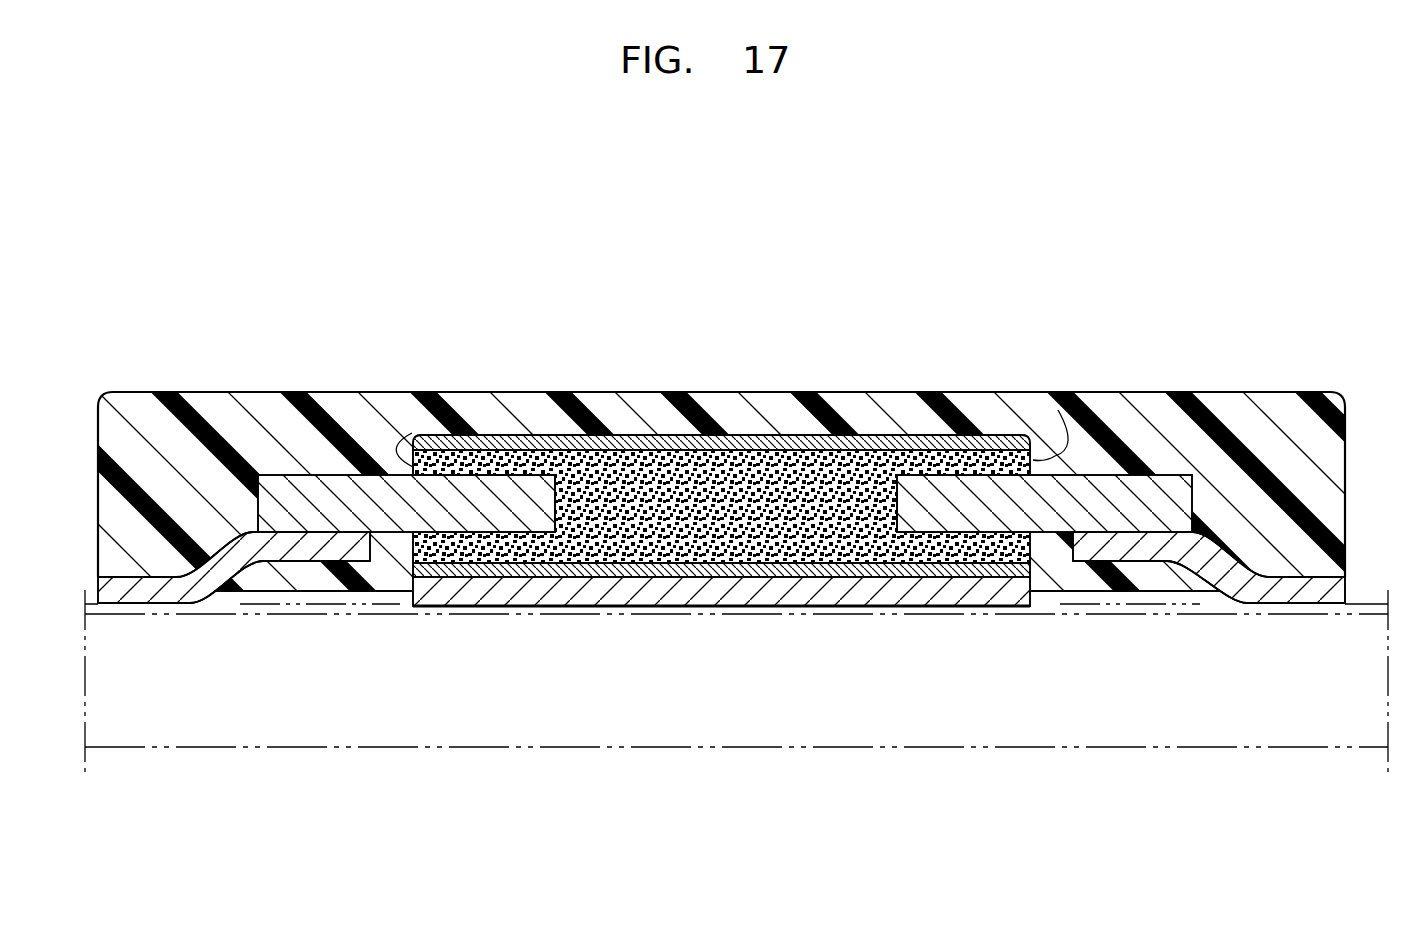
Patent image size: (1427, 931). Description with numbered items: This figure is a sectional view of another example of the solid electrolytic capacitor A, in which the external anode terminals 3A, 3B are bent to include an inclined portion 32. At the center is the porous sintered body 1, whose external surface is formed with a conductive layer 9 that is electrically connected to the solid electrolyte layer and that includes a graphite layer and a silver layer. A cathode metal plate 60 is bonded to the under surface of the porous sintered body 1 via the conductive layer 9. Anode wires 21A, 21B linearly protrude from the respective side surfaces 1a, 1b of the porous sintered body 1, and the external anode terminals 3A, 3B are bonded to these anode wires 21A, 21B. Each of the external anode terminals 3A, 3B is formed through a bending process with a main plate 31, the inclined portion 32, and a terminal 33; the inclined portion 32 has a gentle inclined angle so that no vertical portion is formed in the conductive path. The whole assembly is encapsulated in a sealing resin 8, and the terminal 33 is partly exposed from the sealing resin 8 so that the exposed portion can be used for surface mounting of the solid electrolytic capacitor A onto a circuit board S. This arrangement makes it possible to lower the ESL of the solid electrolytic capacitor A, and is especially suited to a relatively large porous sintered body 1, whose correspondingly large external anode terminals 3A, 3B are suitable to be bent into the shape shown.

The solid electrolytic capacitor A is at (190, 331).
The porous sintered body 1 is at (640, 490).
The side surface of the porous sintered body 1a is at (398, 440).
The side surface of the porous sintered body 1b is at (1058, 410).
The sealing resin 8 is at (733, 413).
The conductive layer 9 is at (835, 428).
The anode wire 21A is at (337, 493).
The anode wire 21B is at (1113, 487).
The main plate 31 is at (305, 565).
The inclined portion 32 is at (233, 593).
The terminal 33 is at (150, 600).
The external anode terminal 3A is at (335, 683).
The external anode terminal 3B is at (1330, 683).
The cathode metal plate 60 is at (680, 595).
The circuit board S is at (1315, 748).